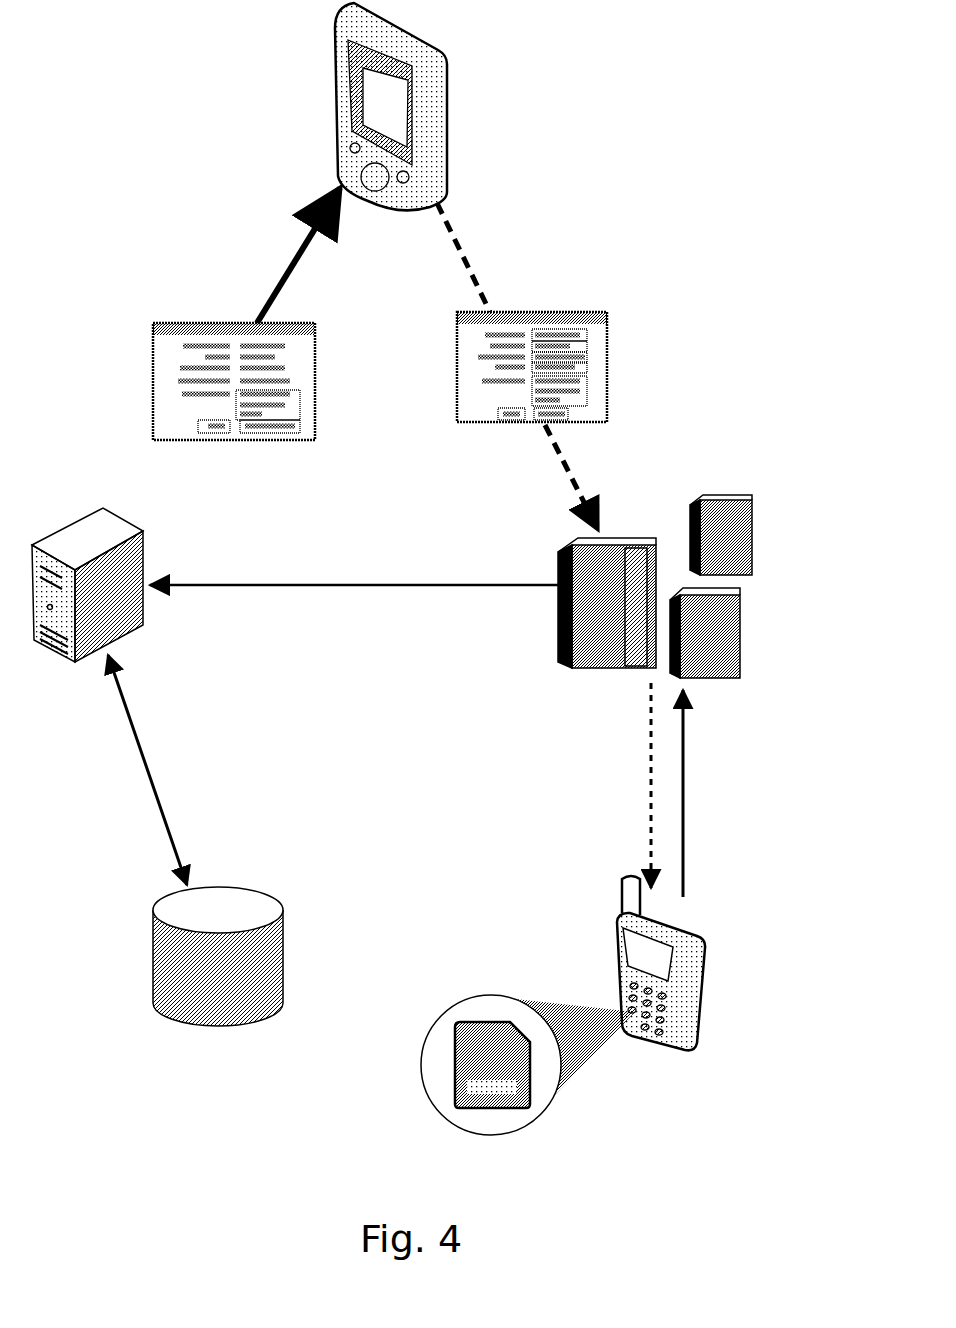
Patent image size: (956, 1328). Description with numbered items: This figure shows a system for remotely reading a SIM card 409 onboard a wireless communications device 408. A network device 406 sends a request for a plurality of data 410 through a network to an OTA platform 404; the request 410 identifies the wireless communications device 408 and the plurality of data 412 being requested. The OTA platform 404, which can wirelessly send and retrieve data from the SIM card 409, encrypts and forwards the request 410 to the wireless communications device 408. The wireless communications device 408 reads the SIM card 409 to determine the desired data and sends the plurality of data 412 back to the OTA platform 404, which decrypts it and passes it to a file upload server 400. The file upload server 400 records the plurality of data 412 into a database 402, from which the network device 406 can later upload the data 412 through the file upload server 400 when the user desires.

The file upload server 400 is at (130, 632).
The database 402 is at (252, 890).
The OTA platform 404 is at (703, 680).
The network device 406 is at (447, 78).
The wireless communications device 408 is at (608, 970).
The SIM card 409 is at (453, 1062).
The request for a plurality of data 410 is at (545, 310).
The plurality of data 412 is at (205, 325).